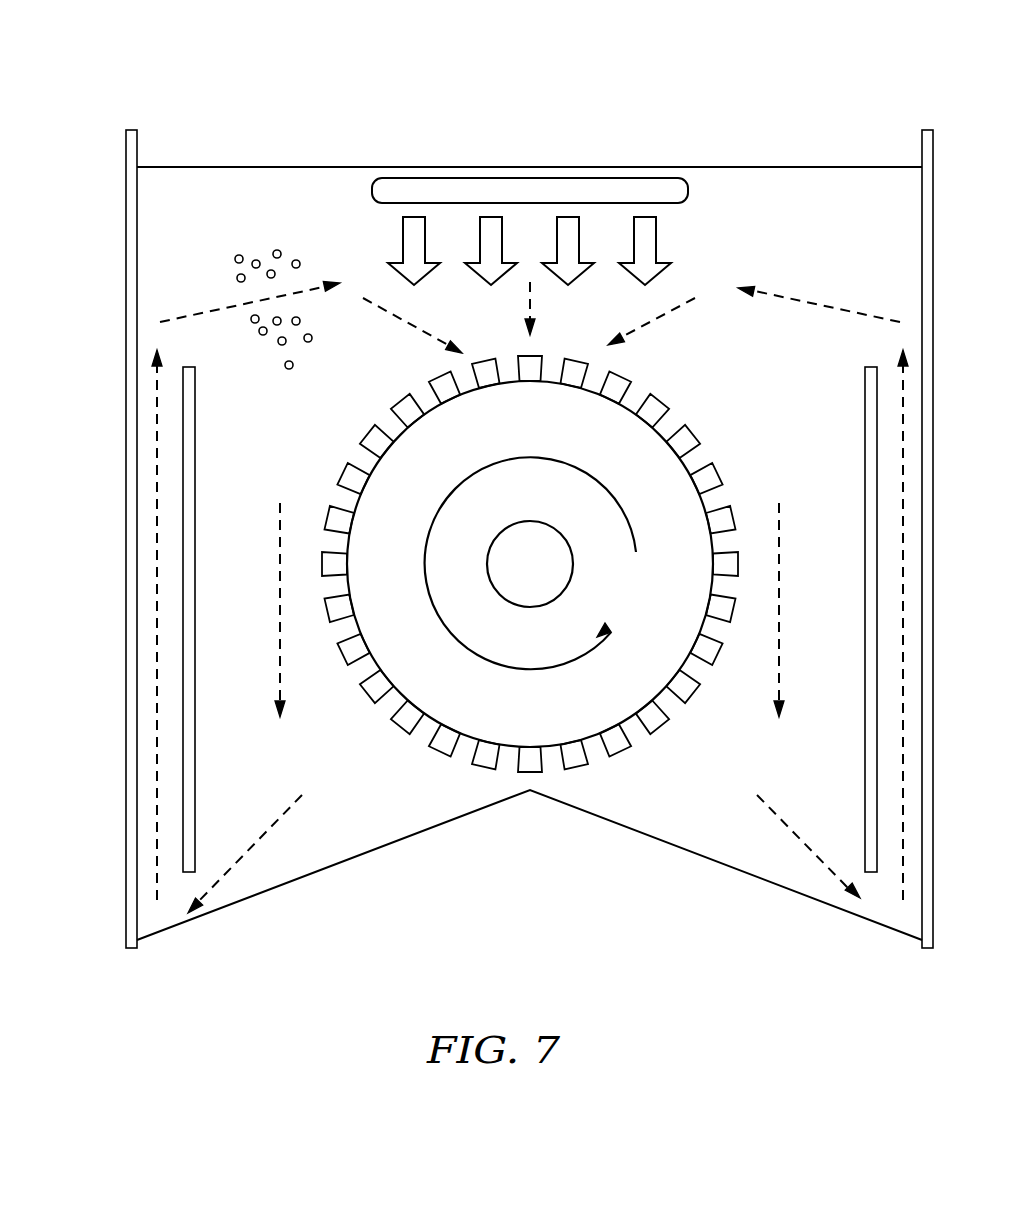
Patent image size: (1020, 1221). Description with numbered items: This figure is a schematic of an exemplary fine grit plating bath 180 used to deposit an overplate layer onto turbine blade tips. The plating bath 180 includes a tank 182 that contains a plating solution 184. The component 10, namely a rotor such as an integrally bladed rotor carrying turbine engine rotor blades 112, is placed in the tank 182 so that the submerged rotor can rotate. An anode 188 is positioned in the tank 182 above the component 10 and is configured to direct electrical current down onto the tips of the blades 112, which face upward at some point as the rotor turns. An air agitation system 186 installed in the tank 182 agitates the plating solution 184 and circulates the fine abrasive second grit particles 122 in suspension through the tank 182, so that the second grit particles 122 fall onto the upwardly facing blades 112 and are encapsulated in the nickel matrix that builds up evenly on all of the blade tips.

The component 10 is at (514, 438).
The turbine engine rotor blades 112 is at (668, 400).
The fine abrasive second grit particles 122 is at (259, 242).
The fine grit plating bath 180 is at (374, 74).
The tank 182 is at (126, 290).
The plating solution 184 is at (789, 192).
The air agitation system 186 is at (157, 758).
The anode 188 is at (648, 178).